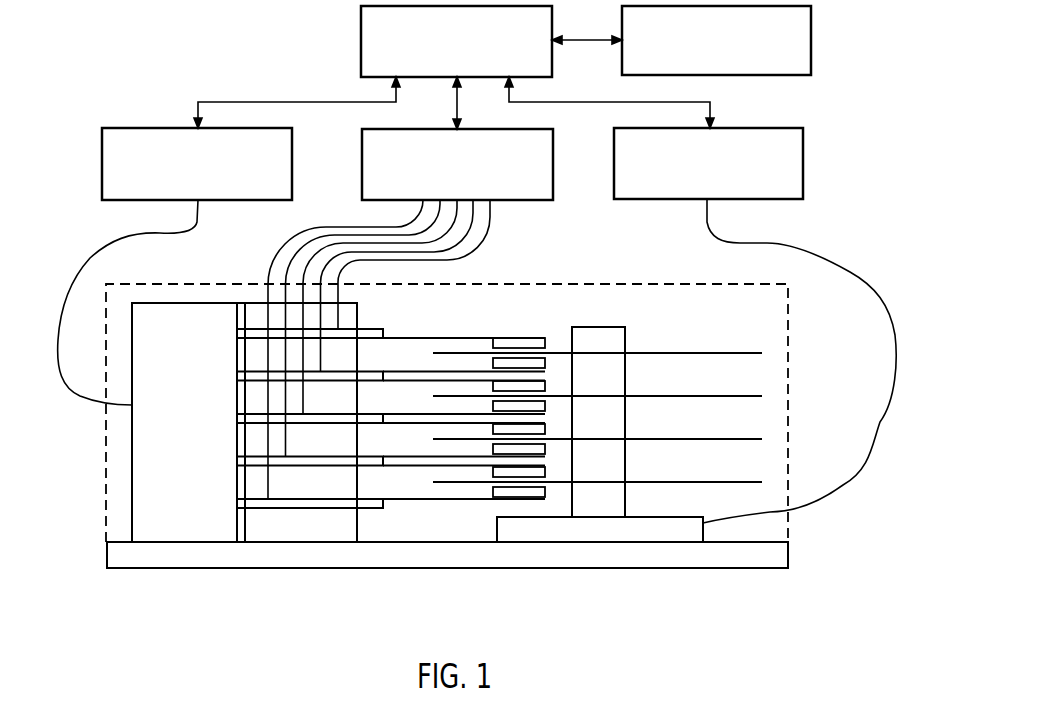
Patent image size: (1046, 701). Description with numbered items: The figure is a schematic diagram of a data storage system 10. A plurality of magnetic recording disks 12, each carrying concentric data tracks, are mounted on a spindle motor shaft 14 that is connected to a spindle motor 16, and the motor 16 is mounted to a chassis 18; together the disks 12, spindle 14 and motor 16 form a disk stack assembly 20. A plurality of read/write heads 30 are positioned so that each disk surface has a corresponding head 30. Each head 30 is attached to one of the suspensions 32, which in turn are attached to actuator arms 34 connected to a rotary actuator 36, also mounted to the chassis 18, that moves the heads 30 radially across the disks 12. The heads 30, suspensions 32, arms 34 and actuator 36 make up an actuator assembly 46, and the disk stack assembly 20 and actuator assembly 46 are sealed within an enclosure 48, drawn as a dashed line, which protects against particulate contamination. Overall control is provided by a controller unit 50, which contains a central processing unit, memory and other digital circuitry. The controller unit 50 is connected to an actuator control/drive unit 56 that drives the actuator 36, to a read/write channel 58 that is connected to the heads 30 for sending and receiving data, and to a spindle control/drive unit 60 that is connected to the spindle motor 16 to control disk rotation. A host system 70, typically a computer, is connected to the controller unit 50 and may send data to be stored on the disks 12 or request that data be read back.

The data storage system 10 is at (146, 598).
The magnetic recording disks 12 is at (733, 396).
The spindle motor shaft 14 is at (625, 333).
The spindle motor 16 is at (627, 528).
The chassis 18 is at (782, 558).
The disk stack assembly 20 is at (563, 525).
The read/write heads 30 is at (528, 366).
The suspensions 32 is at (449, 413).
The actuator arms 34 is at (350, 335).
The rotary actuator 36 is at (202, 418).
The actuator assembly 46 is at (157, 507).
The enclosure 48 is at (106, 455).
The controller unit 50 is at (361, 43).
The actuator control/drive unit 56 is at (102, 168).
The read/write channel 58 is at (362, 168).
The spindle control/drive unit 60 is at (803, 160).
The host system 70 is at (811, 38).